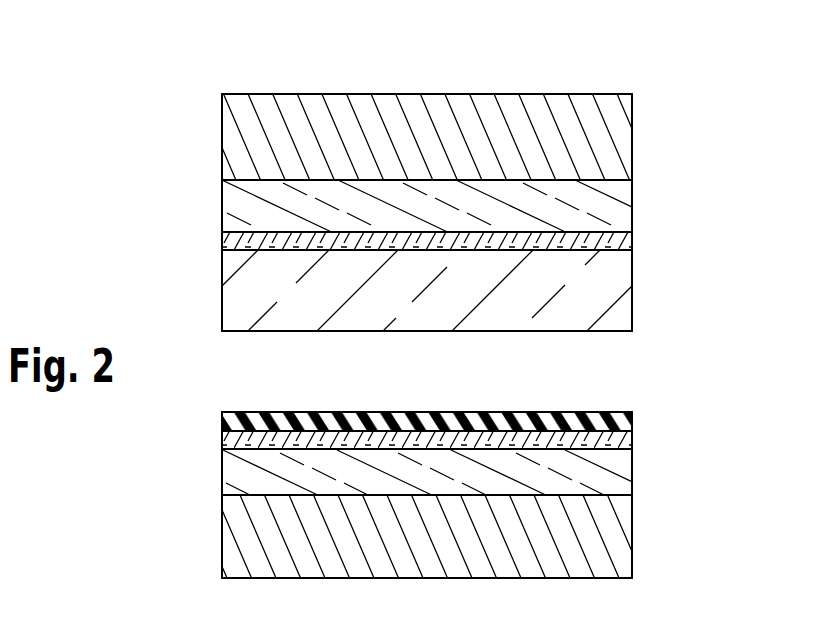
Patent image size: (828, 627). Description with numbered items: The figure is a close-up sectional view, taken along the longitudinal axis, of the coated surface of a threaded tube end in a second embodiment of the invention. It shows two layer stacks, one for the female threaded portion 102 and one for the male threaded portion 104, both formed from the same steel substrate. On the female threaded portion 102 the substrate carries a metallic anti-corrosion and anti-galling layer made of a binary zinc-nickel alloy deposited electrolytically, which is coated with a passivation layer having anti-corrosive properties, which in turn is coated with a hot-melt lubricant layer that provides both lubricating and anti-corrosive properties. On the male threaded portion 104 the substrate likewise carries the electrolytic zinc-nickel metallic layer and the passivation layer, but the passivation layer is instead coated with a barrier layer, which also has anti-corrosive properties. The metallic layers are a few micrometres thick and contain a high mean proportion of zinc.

The female threaded portion 102 is at (183, 172).
The male threaded portion 104 is at (170, 509).